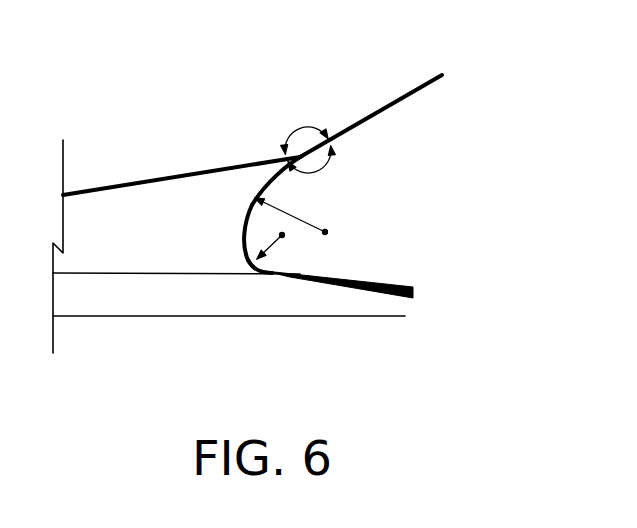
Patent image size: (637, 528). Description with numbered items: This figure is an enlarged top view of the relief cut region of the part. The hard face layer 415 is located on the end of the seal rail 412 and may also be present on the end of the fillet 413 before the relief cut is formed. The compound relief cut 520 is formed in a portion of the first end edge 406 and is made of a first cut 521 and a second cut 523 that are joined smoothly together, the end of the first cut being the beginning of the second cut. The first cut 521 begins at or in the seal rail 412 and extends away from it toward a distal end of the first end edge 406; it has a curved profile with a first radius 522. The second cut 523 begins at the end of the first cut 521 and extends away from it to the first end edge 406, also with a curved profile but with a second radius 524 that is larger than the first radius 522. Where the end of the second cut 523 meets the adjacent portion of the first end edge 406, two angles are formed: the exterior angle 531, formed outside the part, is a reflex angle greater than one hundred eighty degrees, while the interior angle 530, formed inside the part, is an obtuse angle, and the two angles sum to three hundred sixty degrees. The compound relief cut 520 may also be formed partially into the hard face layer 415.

The first end edge 406 is at (403, 97).
The seal rail 412 is at (170, 309).
The fillet 413 is at (170, 237).
The hard face layer 415 is at (414, 297).
The compound relief cut 520 is at (243, 222).
The first cut 521 is at (246, 268).
The first radius 522 is at (278, 243).
The second cut 523 is at (258, 188).
The second radius 524 is at (312, 222).
The interior angle 530 is at (301, 126).
The exterior angle 531 is at (333, 157).